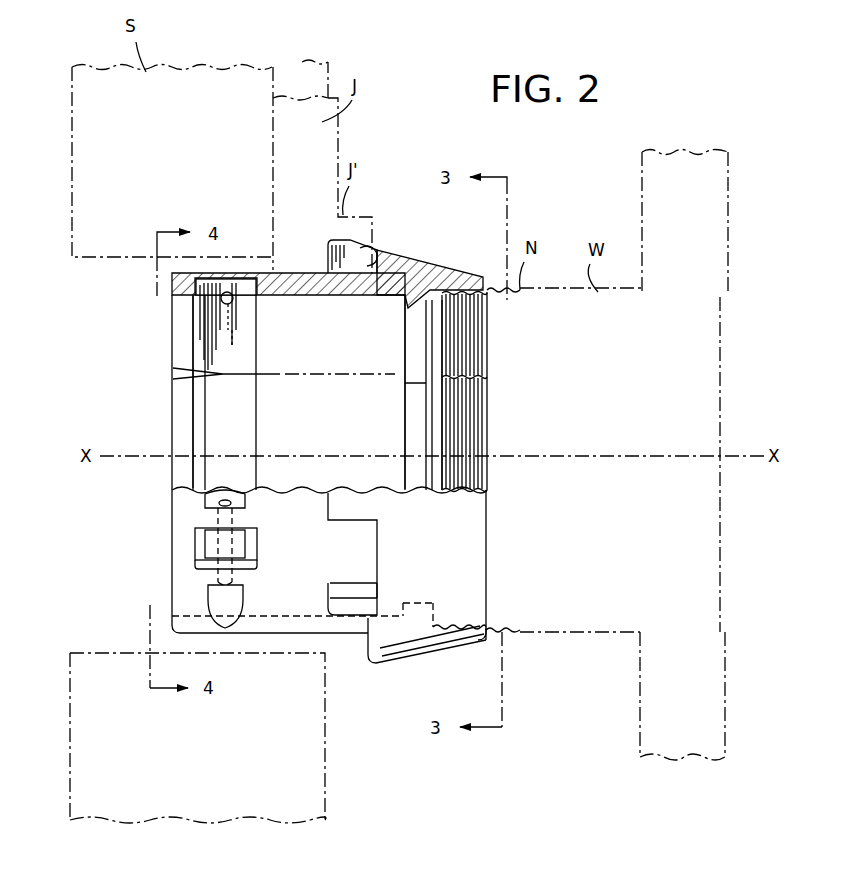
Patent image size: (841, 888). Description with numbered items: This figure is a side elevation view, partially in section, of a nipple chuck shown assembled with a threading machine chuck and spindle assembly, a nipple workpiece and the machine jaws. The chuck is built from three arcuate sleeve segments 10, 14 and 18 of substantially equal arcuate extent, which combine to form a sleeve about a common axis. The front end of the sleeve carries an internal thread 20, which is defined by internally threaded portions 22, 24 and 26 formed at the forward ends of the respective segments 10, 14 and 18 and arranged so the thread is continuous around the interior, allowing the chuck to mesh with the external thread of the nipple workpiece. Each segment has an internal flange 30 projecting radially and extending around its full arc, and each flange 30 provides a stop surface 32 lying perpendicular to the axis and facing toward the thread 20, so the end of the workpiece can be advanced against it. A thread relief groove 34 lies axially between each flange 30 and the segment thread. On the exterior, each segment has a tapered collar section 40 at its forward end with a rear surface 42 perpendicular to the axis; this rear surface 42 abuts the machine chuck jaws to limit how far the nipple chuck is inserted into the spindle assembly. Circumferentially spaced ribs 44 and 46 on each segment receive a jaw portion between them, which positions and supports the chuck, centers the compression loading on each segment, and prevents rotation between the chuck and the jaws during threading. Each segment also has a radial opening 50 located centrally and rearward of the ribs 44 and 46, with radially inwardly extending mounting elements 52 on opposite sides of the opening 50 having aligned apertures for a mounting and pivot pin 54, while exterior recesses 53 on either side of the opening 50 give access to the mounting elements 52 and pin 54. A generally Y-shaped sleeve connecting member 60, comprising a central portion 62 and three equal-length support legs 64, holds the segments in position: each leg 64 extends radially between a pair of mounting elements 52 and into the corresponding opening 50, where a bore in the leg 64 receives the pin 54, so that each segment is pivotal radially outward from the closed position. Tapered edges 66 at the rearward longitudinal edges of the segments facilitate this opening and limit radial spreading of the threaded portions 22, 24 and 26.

The arcuate sleeve segment 10 is at (172, 304).
The arcuate sleeve segment 14 is at (175, 412).
The arcuate sleeve segment 18 is at (182, 602).
The internal thread 20 is at (500, 475).
The internally threaded portion 22 is at (480, 328).
The internally threaded portion 24 is at (480, 430).
The internally threaded portion 26 is at (487, 625).
The internal flange 30 is at (418, 307).
The stop surface 32 is at (435, 388).
The thread relief groove 34 is at (445, 298).
The tapered collar section 40 is at (416, 256).
The rear surface 42 is at (370, 253).
The rib 44 is at (336, 607).
The rib 46 is at (348, 246).
The opening 50 is at (259, 268).
The mounting element 52 is at (215, 504).
The recess 53 is at (205, 488).
The mounting and pivot pin 54 is at (228, 290).
The sleeve connecting member 60 is at (252, 401).
The central portion 62 is at (205, 441).
The support leg 64 is at (224, 347).
The tapered edge 66 is at (185, 369).